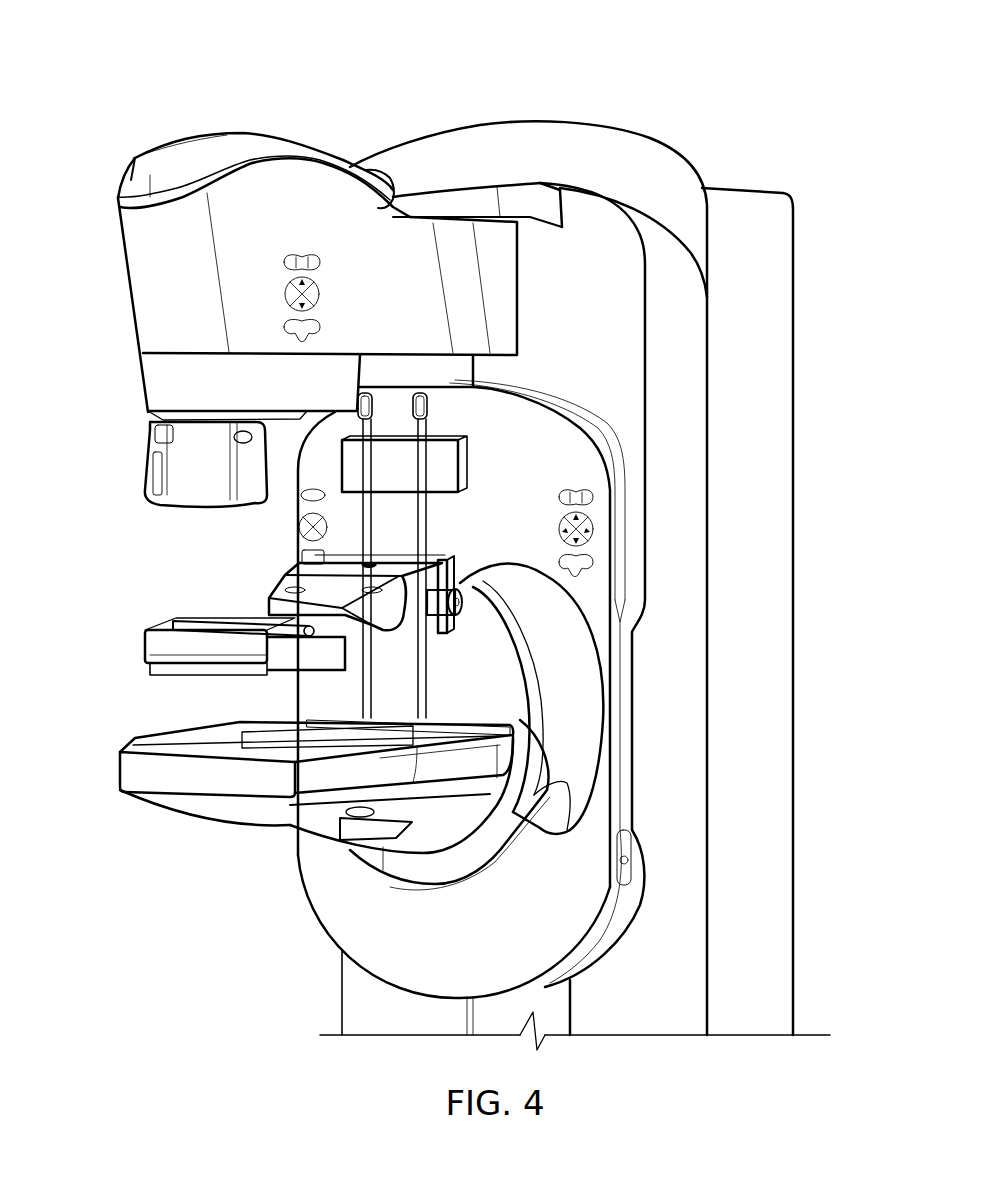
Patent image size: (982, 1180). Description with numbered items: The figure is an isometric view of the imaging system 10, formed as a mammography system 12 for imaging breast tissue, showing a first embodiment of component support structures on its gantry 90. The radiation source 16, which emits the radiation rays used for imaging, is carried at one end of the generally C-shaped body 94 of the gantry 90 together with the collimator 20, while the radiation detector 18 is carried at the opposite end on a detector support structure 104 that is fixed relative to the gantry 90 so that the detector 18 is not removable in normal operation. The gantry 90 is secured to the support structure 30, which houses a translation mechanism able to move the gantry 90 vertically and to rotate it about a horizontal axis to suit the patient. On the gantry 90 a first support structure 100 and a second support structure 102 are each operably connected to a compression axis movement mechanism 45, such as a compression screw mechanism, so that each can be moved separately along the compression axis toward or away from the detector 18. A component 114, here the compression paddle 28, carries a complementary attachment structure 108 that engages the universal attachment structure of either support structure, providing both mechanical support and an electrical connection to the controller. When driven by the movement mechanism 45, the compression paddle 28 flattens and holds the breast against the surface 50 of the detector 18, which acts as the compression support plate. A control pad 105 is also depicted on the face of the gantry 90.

The imaging system 10 is at (555, 57).
The mammography system 12 is at (160, 126).
The radiation source 16 is at (128, 256).
The collimator 20 is at (148, 470).
The gantry 90 is at (580, 183).
The C-shaped body 94 is at (617, 403).
The support structure 30 is at (797, 437).
The first support structure 100 is at (487, 440).
The control pad 105 is at (300, 551).
The component 114 is at (178, 604).
The second support structure 102 is at (462, 627).
The compression axis movement mechanism 45 is at (447, 555).
The complementary attachment structure 108 is at (307, 633).
The compression paddle 28 is at (137, 647).
The radiation detector 18 is at (163, 822).
The detector support structure 104 is at (350, 790).
The surface 50 is at (340, 773).